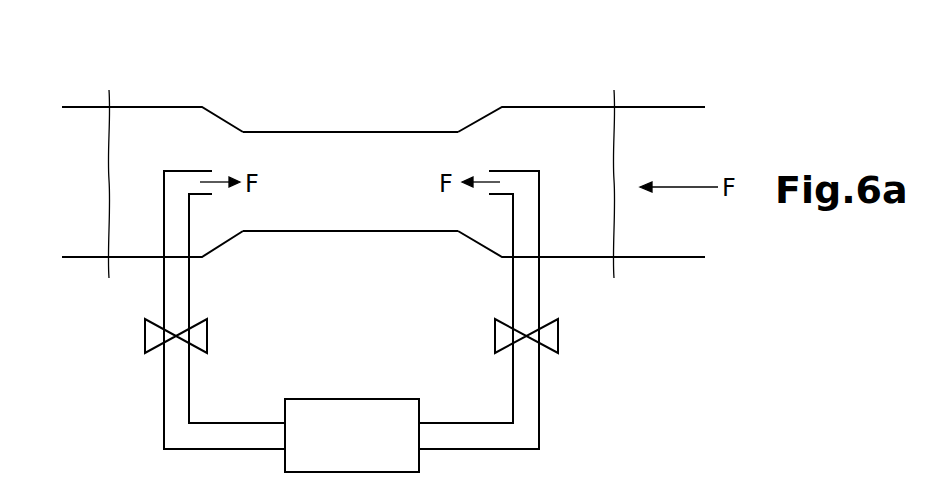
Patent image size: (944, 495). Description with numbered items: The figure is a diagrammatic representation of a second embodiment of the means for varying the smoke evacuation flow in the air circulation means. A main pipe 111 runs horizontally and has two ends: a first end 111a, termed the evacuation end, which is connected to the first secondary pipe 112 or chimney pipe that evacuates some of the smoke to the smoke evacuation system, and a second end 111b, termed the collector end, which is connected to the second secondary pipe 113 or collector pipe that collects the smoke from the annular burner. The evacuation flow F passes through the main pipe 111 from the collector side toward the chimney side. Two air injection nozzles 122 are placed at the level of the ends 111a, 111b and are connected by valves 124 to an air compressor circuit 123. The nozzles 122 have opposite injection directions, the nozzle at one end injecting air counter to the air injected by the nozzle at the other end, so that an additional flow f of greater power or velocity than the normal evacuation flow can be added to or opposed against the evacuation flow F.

The main pipe 111 is at (391, 132).
The first end 111a is at (118, 107).
The second end 111b is at (601, 107).
The first secondary pipe 112 is at (85, 107).
The second secondary pipe 113 is at (660, 107).
The air injection nozzle 122 is at (197, 170).
The air compressor circuit 123 is at (327, 449).
The valve 124 is at (145, 333).